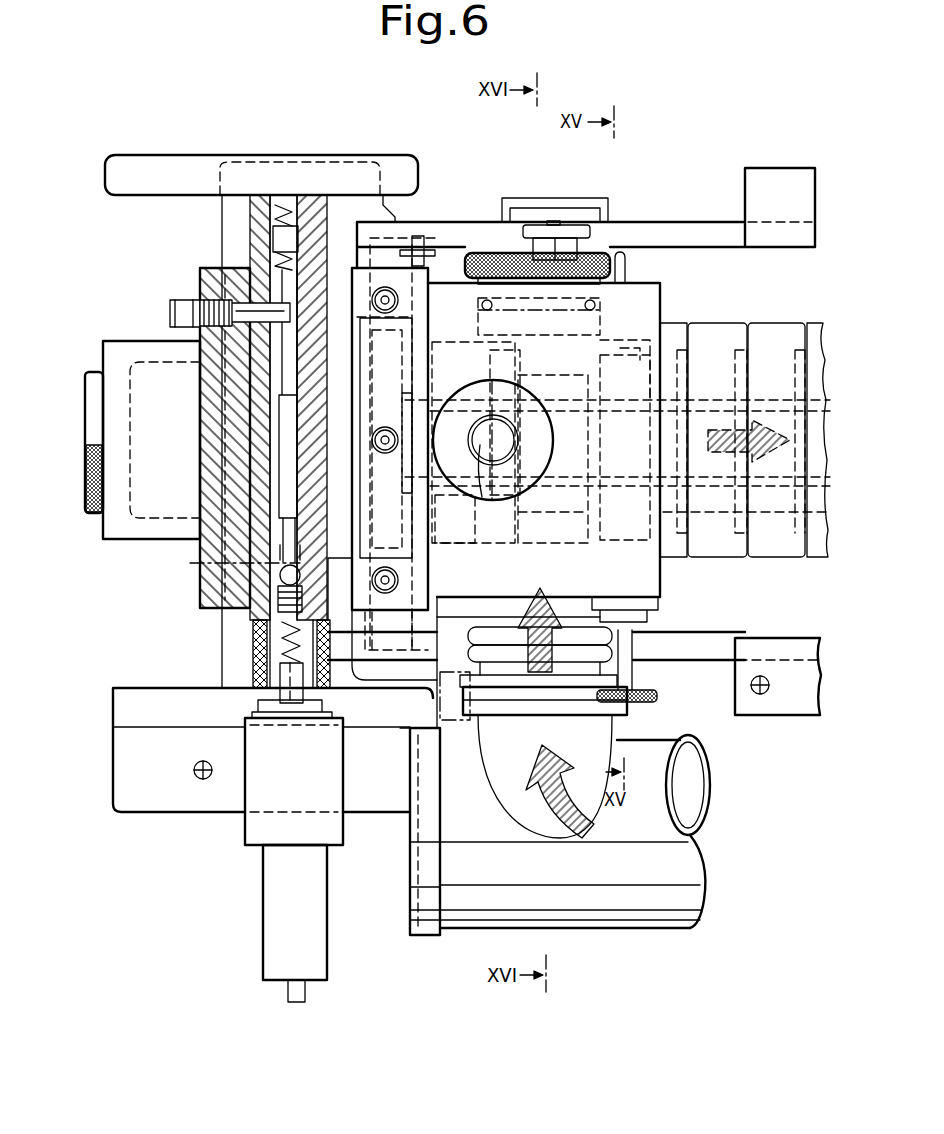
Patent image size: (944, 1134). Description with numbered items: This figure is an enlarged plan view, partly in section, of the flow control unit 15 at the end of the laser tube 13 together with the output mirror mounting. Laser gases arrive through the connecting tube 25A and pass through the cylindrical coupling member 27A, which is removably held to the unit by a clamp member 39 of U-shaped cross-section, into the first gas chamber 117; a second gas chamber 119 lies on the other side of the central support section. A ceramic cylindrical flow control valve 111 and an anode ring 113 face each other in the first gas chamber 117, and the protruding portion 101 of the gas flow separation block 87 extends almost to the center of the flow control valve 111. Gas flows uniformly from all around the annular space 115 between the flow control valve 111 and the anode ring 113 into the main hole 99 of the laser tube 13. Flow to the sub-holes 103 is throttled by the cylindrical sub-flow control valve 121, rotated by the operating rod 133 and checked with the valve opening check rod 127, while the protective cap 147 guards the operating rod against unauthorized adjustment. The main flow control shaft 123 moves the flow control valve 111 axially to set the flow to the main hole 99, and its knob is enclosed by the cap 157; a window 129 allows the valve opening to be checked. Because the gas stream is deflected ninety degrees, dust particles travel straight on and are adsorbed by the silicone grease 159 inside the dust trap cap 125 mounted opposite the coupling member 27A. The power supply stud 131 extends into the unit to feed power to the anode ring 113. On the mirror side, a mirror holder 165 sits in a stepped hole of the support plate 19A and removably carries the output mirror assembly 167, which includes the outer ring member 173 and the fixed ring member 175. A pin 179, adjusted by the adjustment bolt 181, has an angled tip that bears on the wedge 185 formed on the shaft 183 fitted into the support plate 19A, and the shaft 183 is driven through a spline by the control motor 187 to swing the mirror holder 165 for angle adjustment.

The laser tube 13 is at (770, 330).
The flow control unit 15 is at (642, 296).
The support plate 19A is at (262, 626).
The connecting tube 25A is at (665, 905).
The cylindrical coupling member 27A is at (628, 709).
The clamp member 39 is at (448, 722).
The gas flow separation block 87 is at (683, 556).
The main hole 99 is at (722, 478).
The protruding portion 101 is at (621, 447).
The sub-holes 103 is at (712, 545).
The flow control valve 111 is at (559, 364).
The anode ring 113 is at (440, 400).
The annular space 115 is at (492, 388).
The first gas chamber 117 is at (470, 526).
The second gas chamber 119 is at (630, 526).
The sub-flow control valve 121 is at (640, 352).
The main flow control shaft 123 is at (556, 245).
The dust trap cap 125 is at (480, 256).
The valve opening check rod 127 is at (620, 252).
The window 129 is at (484, 498).
The power supply stud 131 is at (416, 250).
The operating rod 133 is at (626, 674).
The protective cap 147 is at (655, 692).
The cap 157 is at (575, 228).
The silicone grease 159 is at (522, 200).
The mirror holder 165 is at (200, 590).
The output mirror assembly 167 is at (145, 244).
The outer ring member 173 is at (130, 346).
The fixed ring member 175 is at (87, 370).
The pin 179 is at (238, 300).
The adjustment bolt 181 is at (183, 297).
The shaft 183 is at (285, 542).
The wedge 185 is at (325, 320).
The control motor 187 is at (262, 892).